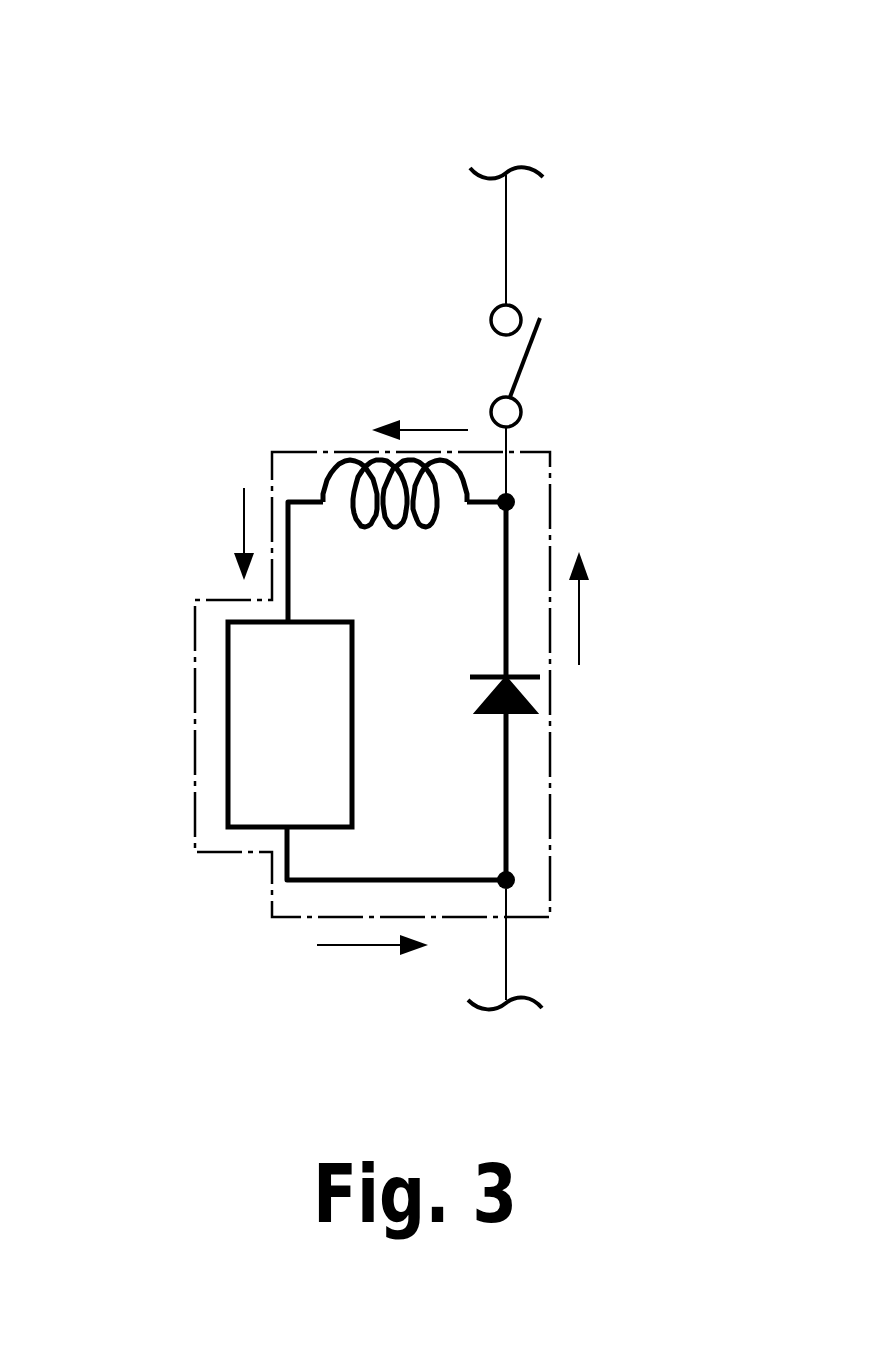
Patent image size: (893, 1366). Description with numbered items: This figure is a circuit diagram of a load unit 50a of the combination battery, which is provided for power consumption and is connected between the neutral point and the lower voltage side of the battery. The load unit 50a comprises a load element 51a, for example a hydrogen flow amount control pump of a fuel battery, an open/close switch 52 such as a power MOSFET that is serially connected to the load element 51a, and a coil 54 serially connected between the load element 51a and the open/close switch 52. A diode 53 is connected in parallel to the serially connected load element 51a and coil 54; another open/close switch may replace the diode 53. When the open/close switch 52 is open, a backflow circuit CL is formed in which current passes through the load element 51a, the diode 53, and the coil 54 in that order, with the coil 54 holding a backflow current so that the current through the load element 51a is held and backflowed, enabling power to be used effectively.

The load unit 50a is at (342, 112).
The open/close switch 52 is at (472, 333).
The coil 54 is at (339, 464).
The load element 51a is at (230, 670).
The diode 53 is at (517, 717).
The backflow circuit CL is at (550, 528).